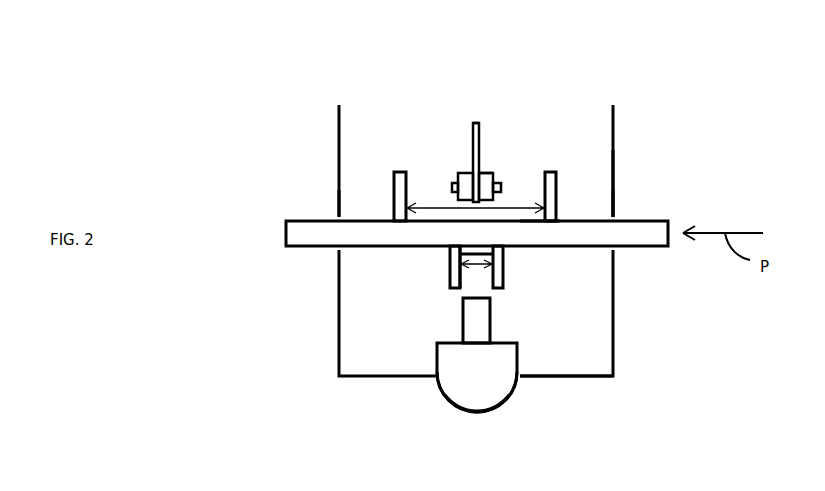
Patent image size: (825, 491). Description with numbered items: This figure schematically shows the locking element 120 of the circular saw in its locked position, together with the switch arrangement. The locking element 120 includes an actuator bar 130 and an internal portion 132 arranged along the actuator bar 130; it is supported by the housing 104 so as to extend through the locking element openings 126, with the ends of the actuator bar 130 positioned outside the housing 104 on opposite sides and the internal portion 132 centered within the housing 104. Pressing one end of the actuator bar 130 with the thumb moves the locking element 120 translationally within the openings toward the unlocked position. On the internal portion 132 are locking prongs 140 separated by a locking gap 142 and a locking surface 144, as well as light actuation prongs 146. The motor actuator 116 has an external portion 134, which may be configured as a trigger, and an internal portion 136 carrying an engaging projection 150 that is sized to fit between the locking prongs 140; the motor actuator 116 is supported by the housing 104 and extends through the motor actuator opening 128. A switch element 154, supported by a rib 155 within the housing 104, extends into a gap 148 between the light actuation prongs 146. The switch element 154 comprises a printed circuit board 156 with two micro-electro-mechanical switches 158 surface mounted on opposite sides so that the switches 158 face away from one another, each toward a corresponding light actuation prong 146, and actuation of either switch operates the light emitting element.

The housing 104 is at (613, 135).
The motor actuator 116 is at (452, 383).
The locking element 120 is at (614, 216).
The locking element openings 126 is at (337, 215).
The motor actuator opening 128 is at (520, 378).
The actuator bar 130 is at (302, 237).
The internal portion 132 is at (527, 236).
The external portion 134 is at (482, 397).
The internal portion 136 is at (457, 352).
The locking prongs 140 is at (452, 273).
The locking gap 142 is at (470, 268).
The locking surface 144 is at (507, 274).
The light actuation prongs 146 is at (398, 195).
The gap 148 is at (526, 205).
The engaging projection 150 is at (483, 321).
The switch element 154 is at (481, 130).
The rib 155 is at (488, 173).
The printed circuit board 156 is at (474, 127).
The MEM switches 158 is at (462, 180).